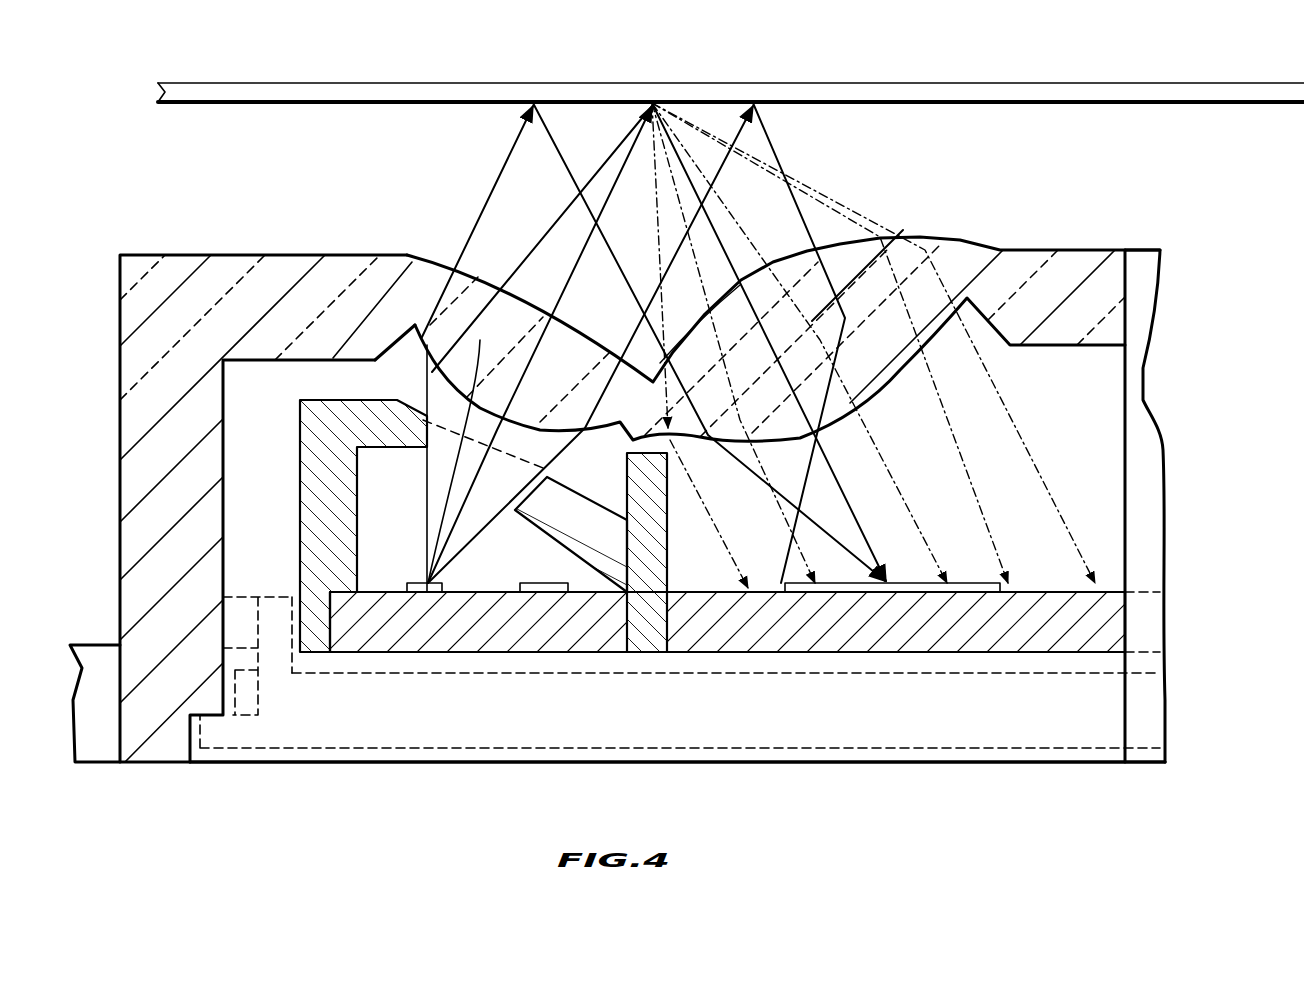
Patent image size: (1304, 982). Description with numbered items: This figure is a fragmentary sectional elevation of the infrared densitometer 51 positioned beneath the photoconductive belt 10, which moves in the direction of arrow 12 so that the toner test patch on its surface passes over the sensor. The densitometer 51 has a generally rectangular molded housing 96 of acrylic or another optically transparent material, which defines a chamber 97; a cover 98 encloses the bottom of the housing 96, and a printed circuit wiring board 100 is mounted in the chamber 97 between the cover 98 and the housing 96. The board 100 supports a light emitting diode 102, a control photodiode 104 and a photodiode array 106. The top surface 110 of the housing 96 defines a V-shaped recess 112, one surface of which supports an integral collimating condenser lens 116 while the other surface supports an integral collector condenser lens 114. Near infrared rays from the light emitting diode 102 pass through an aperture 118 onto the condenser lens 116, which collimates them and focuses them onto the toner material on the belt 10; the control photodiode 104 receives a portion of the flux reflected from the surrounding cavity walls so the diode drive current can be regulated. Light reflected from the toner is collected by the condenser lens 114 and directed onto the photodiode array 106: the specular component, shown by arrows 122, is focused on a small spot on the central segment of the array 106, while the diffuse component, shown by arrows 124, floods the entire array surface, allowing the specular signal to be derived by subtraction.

The photoconductive belt 10 is at (1019, 62).
The arrow 12 is at (633, 67).
The infrared densitometer 51 is at (1202, 440).
The molded housing 96 is at (223, 460).
The chamber 97 is at (1093, 360).
The cover 98 is at (447, 763).
The printed circuit wiring board 100 is at (298, 527).
The light emitting diode 102 is at (415, 583).
The control photodiode 104 is at (537, 583).
The photodiode array 106 is at (927, 587).
The top surface 110 is at (212, 254).
The V-shaped recess 112 is at (551, 199).
The condenser lens 114 is at (893, 277).
The condenser lens 116 is at (505, 405).
The aperture 118 is at (480, 340).
The arrows 122 is at (845, 318).
The arrows 124 is at (1040, 470).